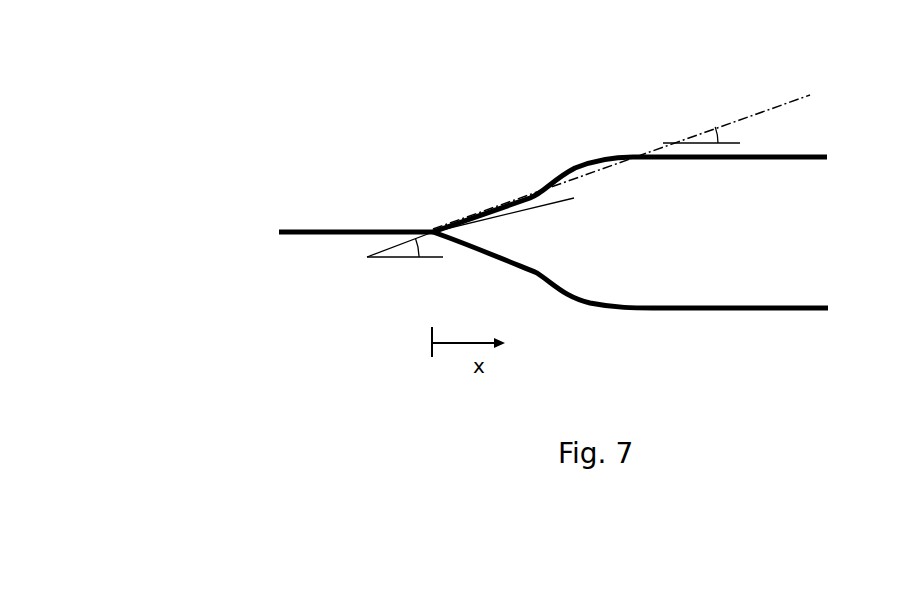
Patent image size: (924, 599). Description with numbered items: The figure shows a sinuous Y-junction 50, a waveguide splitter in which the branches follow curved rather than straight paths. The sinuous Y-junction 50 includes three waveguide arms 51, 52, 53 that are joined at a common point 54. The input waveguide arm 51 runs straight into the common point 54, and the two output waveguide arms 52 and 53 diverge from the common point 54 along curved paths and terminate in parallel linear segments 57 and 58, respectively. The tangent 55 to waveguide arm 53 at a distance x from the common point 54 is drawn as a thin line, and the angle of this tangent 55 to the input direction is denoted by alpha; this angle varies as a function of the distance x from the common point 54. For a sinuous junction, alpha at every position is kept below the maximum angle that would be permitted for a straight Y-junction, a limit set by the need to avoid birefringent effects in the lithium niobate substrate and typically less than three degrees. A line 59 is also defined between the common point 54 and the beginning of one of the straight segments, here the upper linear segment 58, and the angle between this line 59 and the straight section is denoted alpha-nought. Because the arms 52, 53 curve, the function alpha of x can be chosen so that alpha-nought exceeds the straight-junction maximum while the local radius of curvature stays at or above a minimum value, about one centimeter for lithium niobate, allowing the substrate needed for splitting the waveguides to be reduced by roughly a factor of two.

The sinuous Y-junction 50 is at (156, 135).
The waveguide arm 51 is at (305, 237).
The waveguide arm 52 is at (563, 297).
The waveguide arm 53 is at (550, 178).
The common point 54 is at (424, 231).
The tangent 55 is at (553, 207).
The parallel linear segment 57 is at (782, 315).
The parallel linear segment 58 is at (783, 162).
The line 59 is at (797, 98).